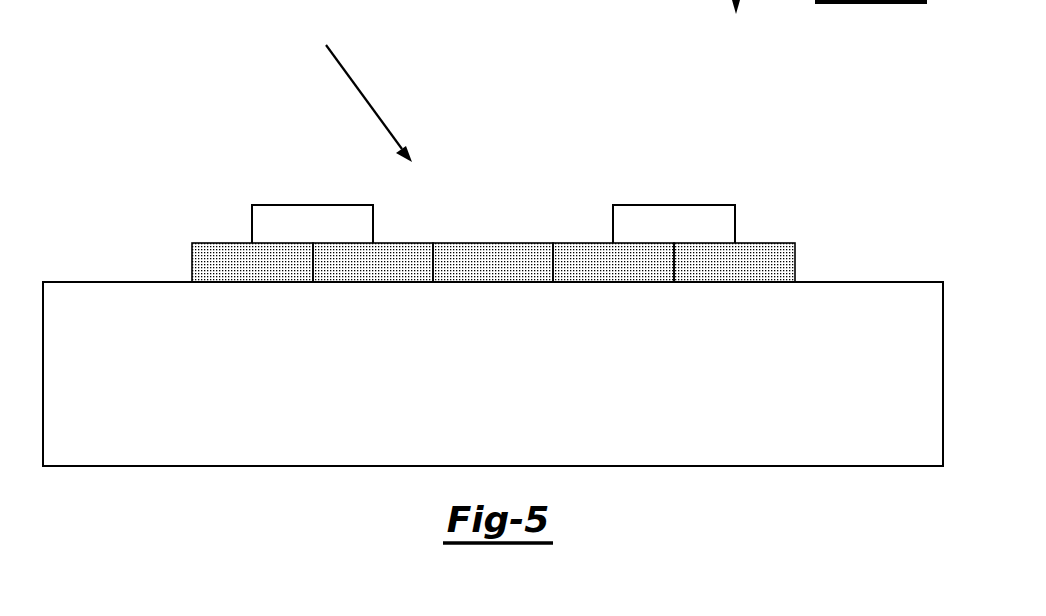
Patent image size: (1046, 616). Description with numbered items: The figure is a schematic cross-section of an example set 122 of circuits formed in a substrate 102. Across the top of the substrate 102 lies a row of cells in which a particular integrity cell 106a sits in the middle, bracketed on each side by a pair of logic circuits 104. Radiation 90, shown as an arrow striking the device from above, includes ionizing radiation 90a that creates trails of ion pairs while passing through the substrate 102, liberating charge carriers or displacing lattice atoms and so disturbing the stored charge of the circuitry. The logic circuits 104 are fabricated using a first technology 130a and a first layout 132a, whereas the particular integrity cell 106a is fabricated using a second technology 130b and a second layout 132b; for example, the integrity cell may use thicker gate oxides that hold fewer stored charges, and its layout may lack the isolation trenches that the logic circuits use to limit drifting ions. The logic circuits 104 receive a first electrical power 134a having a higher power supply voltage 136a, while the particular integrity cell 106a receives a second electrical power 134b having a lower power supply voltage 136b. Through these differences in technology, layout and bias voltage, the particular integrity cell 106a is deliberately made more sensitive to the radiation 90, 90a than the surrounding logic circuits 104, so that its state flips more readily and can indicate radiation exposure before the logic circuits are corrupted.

The radiation 90 is at (373, 90).
The ionizing radiation 90a is at (357, 87).
The substrate 102 is at (83, 467).
The logic circuit 104 is at (222, 243).
The particular integrity cell 106a is at (530, 243).
The set 122 is at (565, 121).
The first technology 130a is at (493, 322).
The second technology 130b is at (488, 322).
The first layout 132a is at (372, 282).
The second layout 132b is at (496, 282).
The first electrical power 134a is at (493, 186).
The second electrical power 134b is at (492, 243).
The higher power supply voltage 136a is at (313, 205).
The lower power supply voltage 136b is at (675, 205).